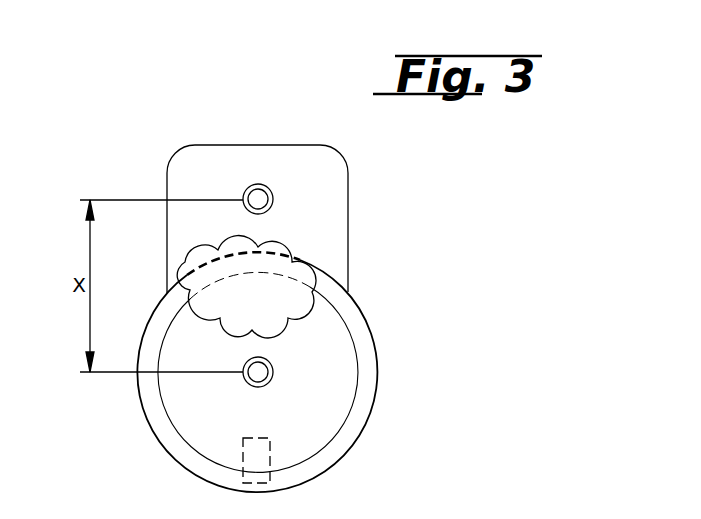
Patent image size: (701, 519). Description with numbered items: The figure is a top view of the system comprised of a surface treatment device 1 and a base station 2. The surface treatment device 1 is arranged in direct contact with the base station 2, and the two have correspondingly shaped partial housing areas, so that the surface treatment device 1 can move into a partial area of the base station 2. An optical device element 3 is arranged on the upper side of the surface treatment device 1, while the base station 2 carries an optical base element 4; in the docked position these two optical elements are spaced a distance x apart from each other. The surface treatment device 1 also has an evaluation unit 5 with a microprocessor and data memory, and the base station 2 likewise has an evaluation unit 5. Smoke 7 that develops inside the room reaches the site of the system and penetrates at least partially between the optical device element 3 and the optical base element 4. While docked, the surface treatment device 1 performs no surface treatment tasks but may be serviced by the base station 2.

The surface treatment device 1 is at (355, 413).
The base station 2 is at (323, 202).
The optical device element 3 is at (273, 371).
The optical base element 4 is at (259, 197).
The evaluation unit 5 is at (260, 452).
The smoke 7 is at (315, 273).